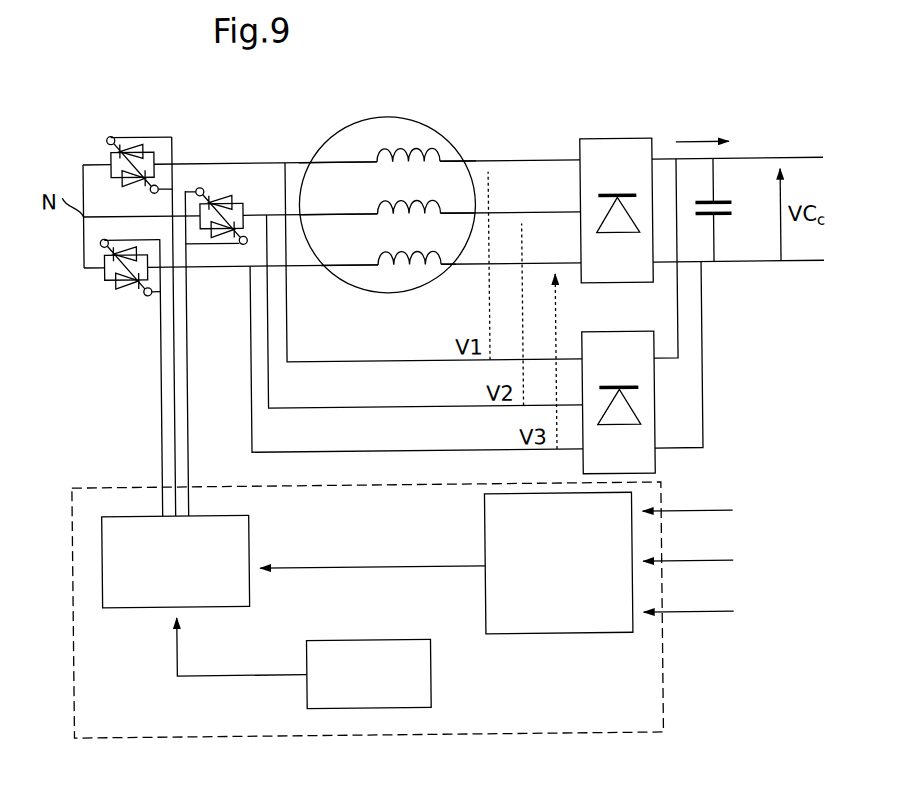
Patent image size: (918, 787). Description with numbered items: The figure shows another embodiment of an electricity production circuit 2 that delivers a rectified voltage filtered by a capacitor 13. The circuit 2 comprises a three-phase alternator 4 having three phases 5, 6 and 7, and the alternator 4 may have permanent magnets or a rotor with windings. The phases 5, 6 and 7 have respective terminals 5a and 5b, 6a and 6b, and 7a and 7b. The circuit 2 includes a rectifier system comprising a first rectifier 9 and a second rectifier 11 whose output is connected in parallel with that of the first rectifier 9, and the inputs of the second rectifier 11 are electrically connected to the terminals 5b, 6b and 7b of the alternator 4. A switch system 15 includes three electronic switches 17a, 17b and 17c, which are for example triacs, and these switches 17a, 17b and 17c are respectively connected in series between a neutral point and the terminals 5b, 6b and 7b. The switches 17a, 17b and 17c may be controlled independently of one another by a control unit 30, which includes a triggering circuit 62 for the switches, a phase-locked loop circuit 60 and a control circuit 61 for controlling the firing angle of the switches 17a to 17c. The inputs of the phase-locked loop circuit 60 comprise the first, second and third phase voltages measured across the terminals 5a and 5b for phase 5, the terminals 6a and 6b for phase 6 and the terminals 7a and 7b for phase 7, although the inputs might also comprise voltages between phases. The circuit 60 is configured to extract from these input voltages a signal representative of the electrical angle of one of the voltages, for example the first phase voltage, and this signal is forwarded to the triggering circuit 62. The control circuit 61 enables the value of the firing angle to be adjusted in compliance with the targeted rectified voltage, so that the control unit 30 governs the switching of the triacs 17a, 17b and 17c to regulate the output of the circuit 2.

The electricity production circuit 2 is at (532, 135).
The three-phase alternator 4 is at (420, 124).
The first phase 5 is at (377, 161).
The first phase terminal 5a is at (453, 161).
The first phase terminal 5b is at (323, 160).
The second phase 6 is at (412, 200).
The second phase terminal 6a is at (460, 217).
The second phase terminal 6b is at (314, 219).
The third phase 7 is at (386, 270).
The third phase terminal 7a is at (442, 271).
The third phase terminal 7b is at (334, 271).
The first rectifier 9 is at (638, 144).
The second rectifier 11 is at (653, 403).
The capacitor 13 is at (722, 222).
The switch system 15 is at (90, 148).
The electronic switch 17a is at (135, 128).
The electronic switch 17b is at (218, 188).
The electronic switch 17c is at (107, 287).
The control unit 30 is at (657, 668).
The phase-locked loop circuit 60 is at (605, 638).
The control circuit 61 is at (426, 667).
The triggering circuit 62 is at (120, 607).